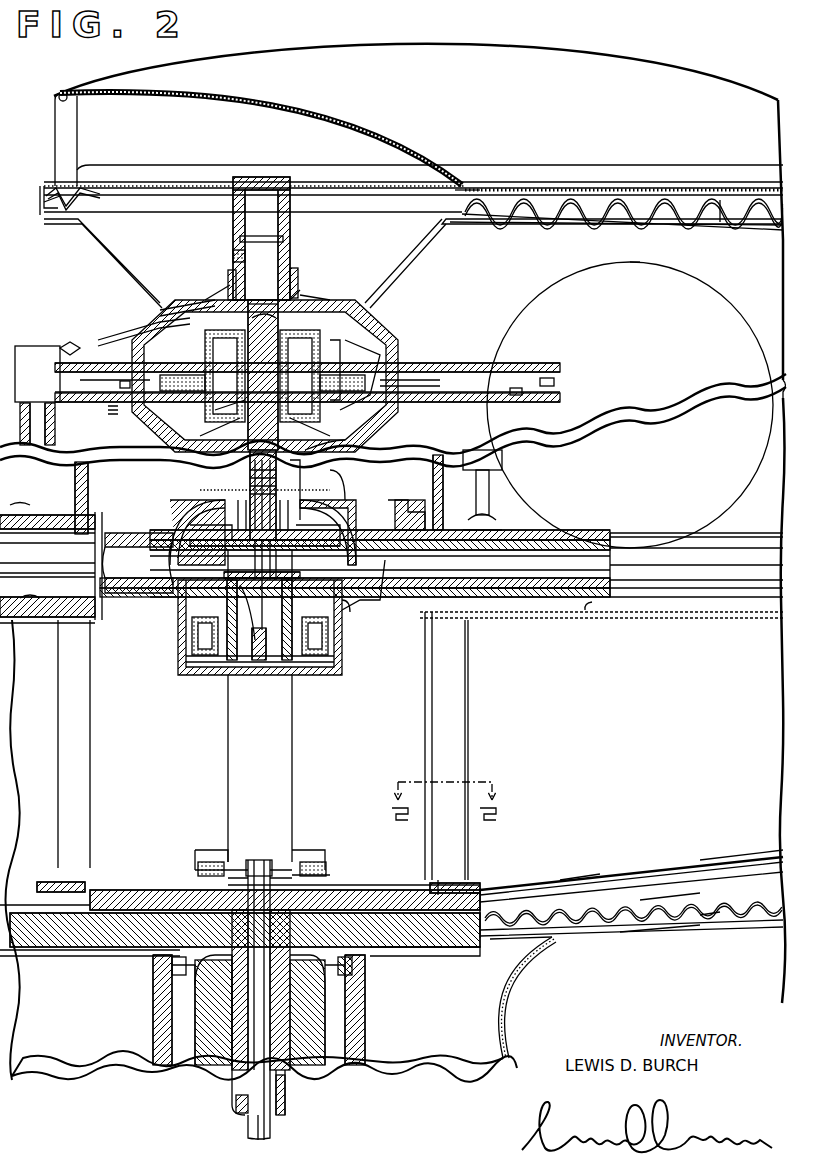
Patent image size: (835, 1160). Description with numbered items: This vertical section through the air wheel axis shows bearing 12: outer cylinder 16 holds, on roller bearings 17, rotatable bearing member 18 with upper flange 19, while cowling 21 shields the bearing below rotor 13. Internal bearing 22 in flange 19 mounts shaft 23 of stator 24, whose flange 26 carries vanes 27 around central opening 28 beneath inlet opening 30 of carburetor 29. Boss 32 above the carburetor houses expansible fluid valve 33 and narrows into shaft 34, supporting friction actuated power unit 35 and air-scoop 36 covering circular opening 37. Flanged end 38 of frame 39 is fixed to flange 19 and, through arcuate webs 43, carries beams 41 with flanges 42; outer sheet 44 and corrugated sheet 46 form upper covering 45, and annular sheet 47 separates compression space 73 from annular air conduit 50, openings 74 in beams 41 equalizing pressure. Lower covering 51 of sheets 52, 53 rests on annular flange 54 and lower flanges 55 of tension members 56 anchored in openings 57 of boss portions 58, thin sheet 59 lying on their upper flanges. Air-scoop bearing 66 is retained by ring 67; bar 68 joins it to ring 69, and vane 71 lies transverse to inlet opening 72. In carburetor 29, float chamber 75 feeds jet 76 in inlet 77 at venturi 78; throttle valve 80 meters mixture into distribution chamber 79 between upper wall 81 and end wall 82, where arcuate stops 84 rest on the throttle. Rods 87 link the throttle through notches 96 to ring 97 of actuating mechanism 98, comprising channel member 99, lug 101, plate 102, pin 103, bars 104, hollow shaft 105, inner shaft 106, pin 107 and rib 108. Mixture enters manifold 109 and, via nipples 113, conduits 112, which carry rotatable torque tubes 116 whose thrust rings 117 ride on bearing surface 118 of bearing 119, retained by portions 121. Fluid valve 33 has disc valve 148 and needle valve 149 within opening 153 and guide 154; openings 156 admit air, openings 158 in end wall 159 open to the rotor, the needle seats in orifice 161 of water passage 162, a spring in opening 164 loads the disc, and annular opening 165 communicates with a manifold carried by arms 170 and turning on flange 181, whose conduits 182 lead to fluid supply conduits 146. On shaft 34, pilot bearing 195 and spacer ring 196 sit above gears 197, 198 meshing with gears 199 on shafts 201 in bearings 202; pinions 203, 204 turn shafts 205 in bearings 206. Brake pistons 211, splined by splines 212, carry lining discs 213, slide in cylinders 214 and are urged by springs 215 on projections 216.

The bearing 12 is at (540, 1051).
The rotor 13 is at (680, 944).
The outer cylinder 16 is at (367, 1044).
The roller bearings 17 is at (355, 966).
The cylindrical bearing member 18 is at (322, 1016).
The flange 19 is at (432, 948).
The cowling 21 is at (512, 1024).
The internal bearing 22 is at (172, 1004).
The shaft portion of stator 23 is at (232, 1082).
The stator 24 is at (144, 851).
The flange of stator 26 is at (130, 896).
The vanes 27 is at (230, 780).
The vertically extending opening 28 is at (275, 752).
The carburetor 29 is at (174, 657).
The inlet opening of carburetor 30 is at (238, 678).
The cylindrical boss 32 is at (318, 534).
The expansible fluid valve 33 is at (227, 520).
The shaft 34 is at (294, 288).
The friction actuated power unit 35 is at (349, 354).
The air-scoop 36 is at (259, 95).
The circular opening 37 is at (80, 185).
The lower flanged end of frame 38 is at (444, 865).
The casing or frame 39 is at (486, 733).
The beams 41 is at (770, 305).
The flanges of beams 42 is at (603, 227).
The arcuate webs 43 is at (425, 325).
The outer metallic sheet 44 is at (740, 225).
The covering 45 is at (513, 212).
The inner corrugated metallic sheet 46 is at (725, 212).
The planular annular metallic sheet 47 is at (602, 612).
The annular air conduit 50 is at (729, 712).
The lower covering 51 is at (705, 880).
The sheet 52 is at (703, 935).
The sheet 53 is at (660, 892).
The annular flange 54 is at (522, 976).
The flanges of tension members 55 is at (732, 893).
The tension members 56 is at (695, 890).
The openings 57 is at (495, 892).
The boss portions 58 is at (480, 880).
The thin annular metallic sheet 59 is at (590, 876).
The bearing of air-scoop 66 is at (262, 176).
The ring 67 is at (268, 235).
The bar 68 is at (173, 170).
The ring 69 is at (72, 180).
The vane 71 is at (665, 73).
The inlet opening of air-scoop 72 is at (56, 118).
The compression space 73 is at (590, 292).
The openings 74 is at (668, 265).
The float chamber 75 is at (334, 650).
The fuel atomizing jet 76 is at (270, 665).
The carburetor inlet 77 is at (288, 678).
The venturi 78 is at (250, 665).
The mixture distribution chamber 79 is at (282, 595).
The throttle valve 80 is at (305, 572).
The upper wall of float chamber 81 is at (217, 620).
The circular end wall 82 is at (182, 610).
The arcuate stops 84 is at (286, 565).
The rods 87 is at (215, 850).
The notches 96 is at (330, 862).
The ring 97 is at (215, 858).
The throttle actuating mechanism 98 is at (264, 849).
The flanged annular channel member 99 is at (196, 858).
The lug 101 is at (330, 878).
The annular supporting plate 102 is at (378, 890).
The pin 103 is at (328, 866).
The radially disposed bars 104 is at (236, 852).
The hollow cylindrical shaft 105 is at (252, 1127).
The second shaft 106 is at (288, 1093).
The pin 107 is at (280, 856).
The rib 108 is at (292, 860).
The manifold 109 is at (345, 600).
The mixture supply conduit 112 is at (555, 548).
The nipple 113 is at (385, 600).
The torque tube 116 is at (735, 540).
The flanged thrust ring 117 is at (428, 622).
The annular bearing surface 118 is at (433, 482).
The bearing 119 is at (455, 483).
The integral portions 121 is at (398, 510).
The expansible fluid supply conduits 146 is at (158, 566).
The disc valve 148 is at (200, 443).
The needle valve 149 is at (215, 497).
The smaller lower cylindrical opening 153 is at (322, 471).
The cylindrical guide 154 is at (330, 494).
The openings 156 is at (347, 500).
The openings 158 is at (352, 303).
The upper end wall of frame 159 is at (230, 290).
The orifice 161 is at (242, 530).
The water supply passage 162 is at (255, 580).
The opening 164 is at (318, 446).
The annular opening 165 is at (205, 475).
The arcuate arms 170 is at (340, 522).
The flange 181 is at (220, 565).
The arcuately formed conduits 182 is at (185, 505).
The pilot bearing 195 is at (292, 268).
The spacer ring 196 is at (235, 258).
The gear 197 is at (215, 290).
The gear 198 is at (345, 421).
The gears 199 is at (200, 347).
The radially disposed shafts 201 is at (76, 378).
The bearings 202 is at (135, 333).
The pinions 203 is at (64, 352).
The pinions 204 is at (78, 356).
The shafts 205 is at (30, 455).
The bearings 206 is at (56, 498).
The annular brake pistons 211 is at (200, 307).
The splines 212 is at (262, 297).
The brake lining discs 213 is at (264, 311).
The annular cylinders 214 is at (215, 402).
The springs 215 is at (320, 290).
The projections 216 is at (212, 414).